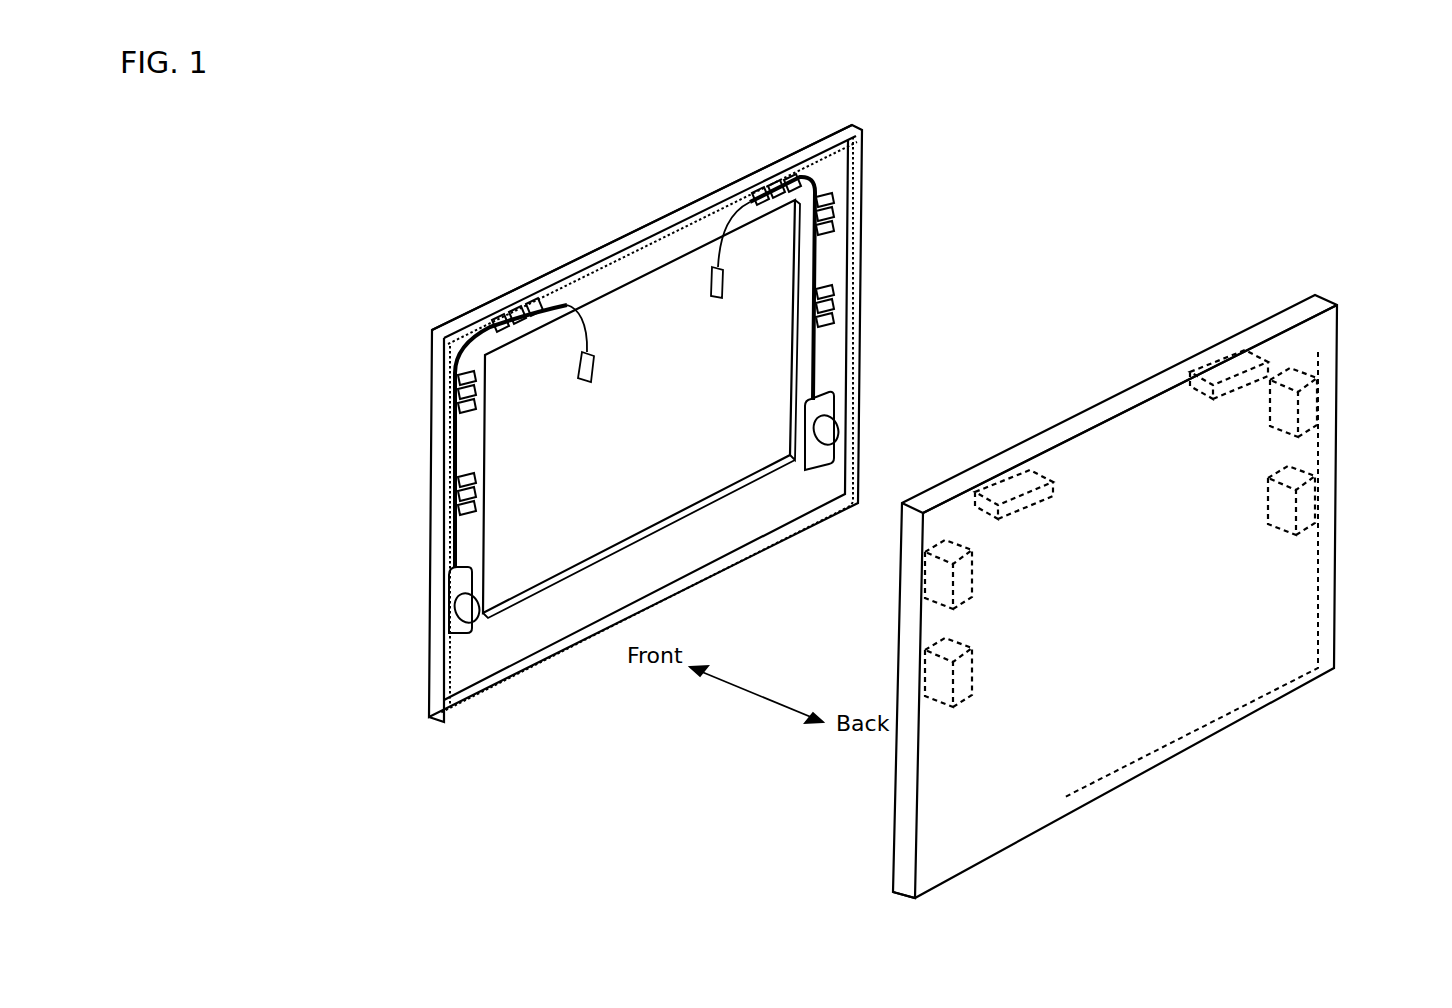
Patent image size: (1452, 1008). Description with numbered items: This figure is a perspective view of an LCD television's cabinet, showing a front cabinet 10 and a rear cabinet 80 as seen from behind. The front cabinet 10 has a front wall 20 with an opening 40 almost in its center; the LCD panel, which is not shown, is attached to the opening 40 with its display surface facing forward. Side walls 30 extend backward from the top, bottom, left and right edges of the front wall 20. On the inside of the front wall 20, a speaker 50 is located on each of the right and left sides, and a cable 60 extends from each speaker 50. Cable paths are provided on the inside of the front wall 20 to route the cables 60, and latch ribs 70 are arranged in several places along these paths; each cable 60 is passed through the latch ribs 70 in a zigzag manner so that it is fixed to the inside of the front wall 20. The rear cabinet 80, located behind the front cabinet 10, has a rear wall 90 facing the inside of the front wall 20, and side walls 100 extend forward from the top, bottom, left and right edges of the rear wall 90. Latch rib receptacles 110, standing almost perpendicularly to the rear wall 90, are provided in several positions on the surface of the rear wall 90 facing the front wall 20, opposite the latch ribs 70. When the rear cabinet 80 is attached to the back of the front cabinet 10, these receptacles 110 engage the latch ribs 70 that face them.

The front cabinet 10 is at (580, 252).
The front wall 20 is at (836, 168).
The side walls 30 is at (853, 255).
The opening 40 is at (627, 282).
The speaker 50 is at (463, 635).
The cable 60 is at (822, 360).
The latch ribs 70 is at (458, 488).
The rear cabinet 80 is at (1146, 372).
The rear wall 90 is at (1070, 452).
The side walls 100 is at (1243, 338).
The latch rib receptacles 110 is at (1313, 497).